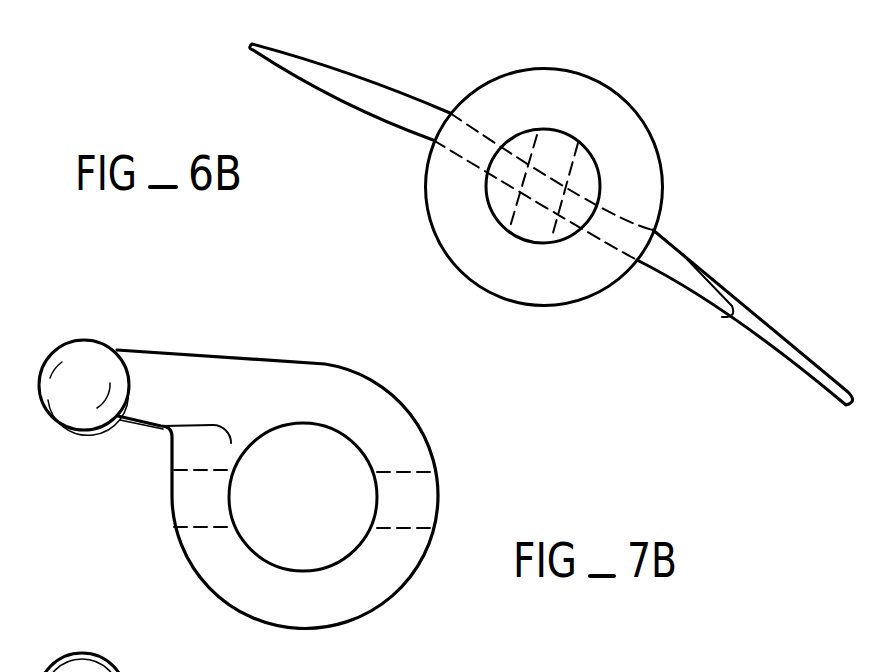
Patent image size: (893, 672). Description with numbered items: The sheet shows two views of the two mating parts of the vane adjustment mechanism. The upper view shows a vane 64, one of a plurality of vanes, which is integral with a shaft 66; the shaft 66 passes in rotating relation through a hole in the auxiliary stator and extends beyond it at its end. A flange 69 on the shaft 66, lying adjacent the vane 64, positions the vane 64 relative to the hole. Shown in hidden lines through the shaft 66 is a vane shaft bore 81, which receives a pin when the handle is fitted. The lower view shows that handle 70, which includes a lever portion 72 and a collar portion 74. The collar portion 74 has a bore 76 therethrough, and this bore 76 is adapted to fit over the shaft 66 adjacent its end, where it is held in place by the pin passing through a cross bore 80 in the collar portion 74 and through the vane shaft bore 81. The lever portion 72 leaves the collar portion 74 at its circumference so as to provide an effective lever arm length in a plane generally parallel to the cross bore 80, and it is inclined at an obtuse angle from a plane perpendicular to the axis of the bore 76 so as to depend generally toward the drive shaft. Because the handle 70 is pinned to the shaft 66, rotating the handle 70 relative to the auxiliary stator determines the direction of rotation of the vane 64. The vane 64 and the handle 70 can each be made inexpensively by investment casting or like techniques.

In FIG. 6B, the vane 64 is at (348, 75).
In FIG. 6B, the shaft 66 is at (598, 168).
In FIG. 6B, the flange 69 is at (582, 70).
In FIG. 6B, the vane shaft bore 81 is at (553, 137).
In FIG. 7B, the handle 70 is at (273, 481).
In FIG. 7B, the lever portion 72 is at (147, 382).
In FIG. 7B, the collar portion 74 is at (232, 612).
In FIG. 7B, the bore 76 is at (340, 563).
In FIG. 7B, the cross bore 80 is at (207, 480).